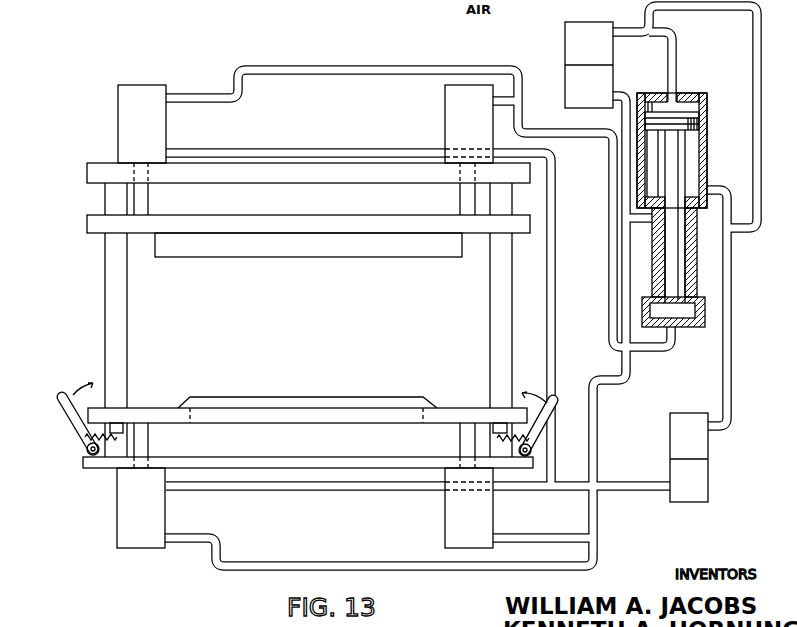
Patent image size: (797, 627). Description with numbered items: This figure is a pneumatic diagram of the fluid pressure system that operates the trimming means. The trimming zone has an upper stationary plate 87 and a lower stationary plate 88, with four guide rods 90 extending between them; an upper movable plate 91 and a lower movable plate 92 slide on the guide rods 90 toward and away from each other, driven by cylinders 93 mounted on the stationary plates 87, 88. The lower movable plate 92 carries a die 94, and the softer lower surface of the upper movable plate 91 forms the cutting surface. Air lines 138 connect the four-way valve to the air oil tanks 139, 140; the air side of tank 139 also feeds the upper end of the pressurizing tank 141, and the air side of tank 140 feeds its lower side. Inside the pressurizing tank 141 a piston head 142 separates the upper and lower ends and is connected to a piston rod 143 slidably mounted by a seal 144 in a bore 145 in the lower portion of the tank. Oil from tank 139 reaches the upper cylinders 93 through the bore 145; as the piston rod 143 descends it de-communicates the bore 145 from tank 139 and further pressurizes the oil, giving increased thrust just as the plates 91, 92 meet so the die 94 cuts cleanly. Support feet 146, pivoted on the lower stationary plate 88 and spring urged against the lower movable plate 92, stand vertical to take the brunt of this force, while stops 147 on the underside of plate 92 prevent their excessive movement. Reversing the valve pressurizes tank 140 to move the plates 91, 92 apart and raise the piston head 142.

The upper stationary plate 87 is at (352, 172).
The lower stationary plate 88 is at (318, 457).
The guide rods 90 is at (127, 307).
The upper movable plate 91 is at (300, 222).
The lower movable plate 92 is at (167, 412).
The cylinders 93 is at (122, 115).
The die 94 is at (318, 400).
The air lines 138 is at (718, 2).
The air oil tank 139 is at (565, 62).
The air oil tank 140 is at (688, 420).
The pressurizing tank 141 is at (695, 95).
The piston head 142 is at (702, 117).
The piston rod 143 is at (678, 152).
The seal 144 is at (685, 207).
The bore 145 is at (677, 257).
The support feet 146 is at (73, 427).
The stops 147 is at (137, 425).